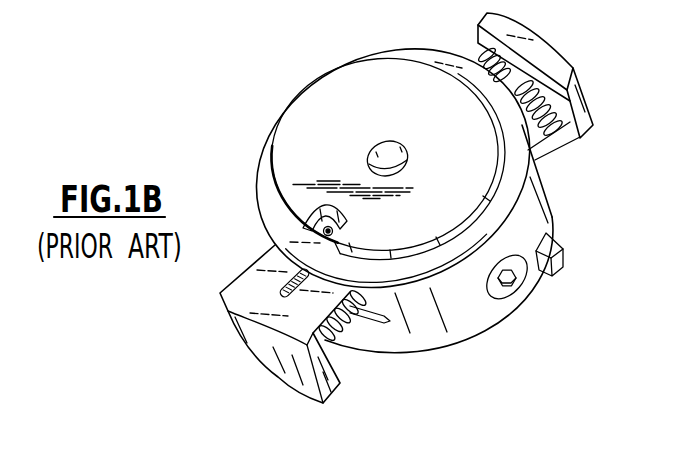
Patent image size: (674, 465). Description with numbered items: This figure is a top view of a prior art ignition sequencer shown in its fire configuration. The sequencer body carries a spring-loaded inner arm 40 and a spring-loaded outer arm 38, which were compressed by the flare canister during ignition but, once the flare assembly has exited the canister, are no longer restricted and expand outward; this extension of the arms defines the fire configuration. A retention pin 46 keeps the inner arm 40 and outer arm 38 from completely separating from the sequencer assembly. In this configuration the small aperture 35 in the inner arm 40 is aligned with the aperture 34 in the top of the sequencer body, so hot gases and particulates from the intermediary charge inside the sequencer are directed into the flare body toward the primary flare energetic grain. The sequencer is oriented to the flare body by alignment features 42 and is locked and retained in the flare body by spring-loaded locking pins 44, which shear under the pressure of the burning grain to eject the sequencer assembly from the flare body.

The aperture in the top of the sequencer body 34 is at (367, 158).
The small aperture in inner arm 35 is at (390, 168).
The outer arm 38 is at (575, 113).
The inner arm 40 is at (248, 262).
The alignment features 42 is at (563, 256).
The spring-loaded locking pins 44 is at (515, 285).
The retention pin 46 is at (342, 232).